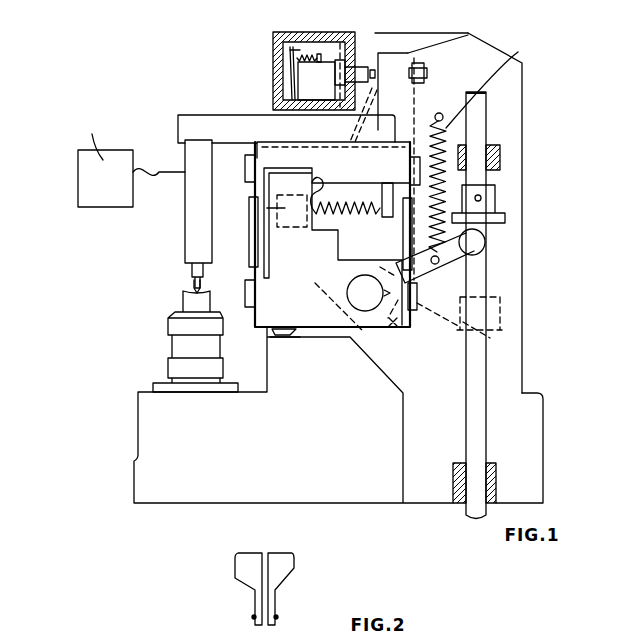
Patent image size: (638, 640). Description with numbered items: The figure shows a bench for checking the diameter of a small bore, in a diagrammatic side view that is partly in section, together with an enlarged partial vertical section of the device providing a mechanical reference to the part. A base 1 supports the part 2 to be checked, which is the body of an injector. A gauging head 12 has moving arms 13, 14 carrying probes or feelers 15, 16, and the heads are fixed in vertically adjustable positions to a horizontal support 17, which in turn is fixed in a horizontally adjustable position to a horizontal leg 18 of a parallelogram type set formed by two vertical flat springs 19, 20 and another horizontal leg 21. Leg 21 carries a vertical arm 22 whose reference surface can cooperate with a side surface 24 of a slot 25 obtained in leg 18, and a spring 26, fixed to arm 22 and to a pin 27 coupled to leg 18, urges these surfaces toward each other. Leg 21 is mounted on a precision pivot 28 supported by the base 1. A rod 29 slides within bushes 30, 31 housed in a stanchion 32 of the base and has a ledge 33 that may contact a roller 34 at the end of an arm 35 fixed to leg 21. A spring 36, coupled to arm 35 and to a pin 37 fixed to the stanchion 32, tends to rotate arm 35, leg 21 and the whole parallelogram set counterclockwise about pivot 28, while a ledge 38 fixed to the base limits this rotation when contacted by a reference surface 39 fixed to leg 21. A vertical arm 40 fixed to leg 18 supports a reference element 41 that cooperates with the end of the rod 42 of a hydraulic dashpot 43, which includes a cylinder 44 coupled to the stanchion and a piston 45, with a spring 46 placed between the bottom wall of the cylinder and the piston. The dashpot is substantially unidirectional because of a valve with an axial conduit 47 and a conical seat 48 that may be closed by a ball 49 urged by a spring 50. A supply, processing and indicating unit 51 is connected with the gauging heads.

In FIG. 1, the base 1 is at (148, 480).
In FIG. 1, the part 2 is at (182, 343).
In FIG. 1, the gauging head 12 is at (195, 237).
In FIG. 1, the moving arm 13 is at (192, 283).
In FIG. 2, the moving arm 13 is at (243, 566).
In FIG. 2, the moving arm 14 is at (290, 568).
In FIG. 2, the probe or feeler 15 is at (252, 618).
In FIG. 2, the probe or feeler 16 is at (280, 617).
In FIG. 1, the horizontal support 17 is at (188, 124).
In FIG. 1, the horizontal leg 18 is at (272, 152).
In FIG. 1, the vertical flat spring 19 is at (252, 190).
In FIG. 1, the vertical flat spring 20 is at (410, 190).
In FIG. 1, the horizontal leg 21 is at (263, 310).
In FIG. 1, the vertical arm 22 is at (327, 245).
In FIG. 1, the side surface 24 is at (303, 202).
In FIG. 1, the slot 25 is at (260, 225).
In FIG. 1, the spring 26 is at (346, 199).
In FIG. 1, the pin 27 is at (385, 193).
In FIG. 1, the precision pivot 28 is at (368, 300).
In FIG. 1, the rod 29 is at (482, 122).
In FIG. 1, the bush 30 is at (498, 150).
In FIG. 1, the bush 31 is at (455, 482).
In FIG. 1, the stanchion 32 is at (510, 293).
In FIG. 1, the ledge 33 is at (505, 218).
In FIG. 1, the roller 34 is at (485, 243).
In FIG. 1, the arm 35 is at (425, 270).
In FIG. 1, the spring 36 is at (522, 60).
In FIG. 1, the pin 37 is at (442, 114).
In FIG. 1, the ledge 38 is at (272, 337).
In FIG. 1, the reference surface 39 is at (272, 332).
In FIG. 1, the vertical arm 40 is at (468, 36).
In FIG. 1, the reference element 41 is at (372, 52).
In FIG. 1, the rod 42 is at (362, 67).
In FIG. 1, the hydraulic dashpot 43 is at (268, 70).
In FIG. 1, the cylinder 44 is at (280, 36).
In FIG. 1, the piston 45 is at (302, 92).
In FIG. 1, the spring 46 is at (288, 85).
In FIG. 1, the axial conduit 47 is at (334, 58).
In FIG. 1, the conical seat 48 is at (320, 54).
In FIG. 1, the ball 49 is at (315, 55).
In FIG. 1, the spring 50 is at (295, 50).
In FIG. 1, the supply, processing and indicating unit 51 is at (103, 200).